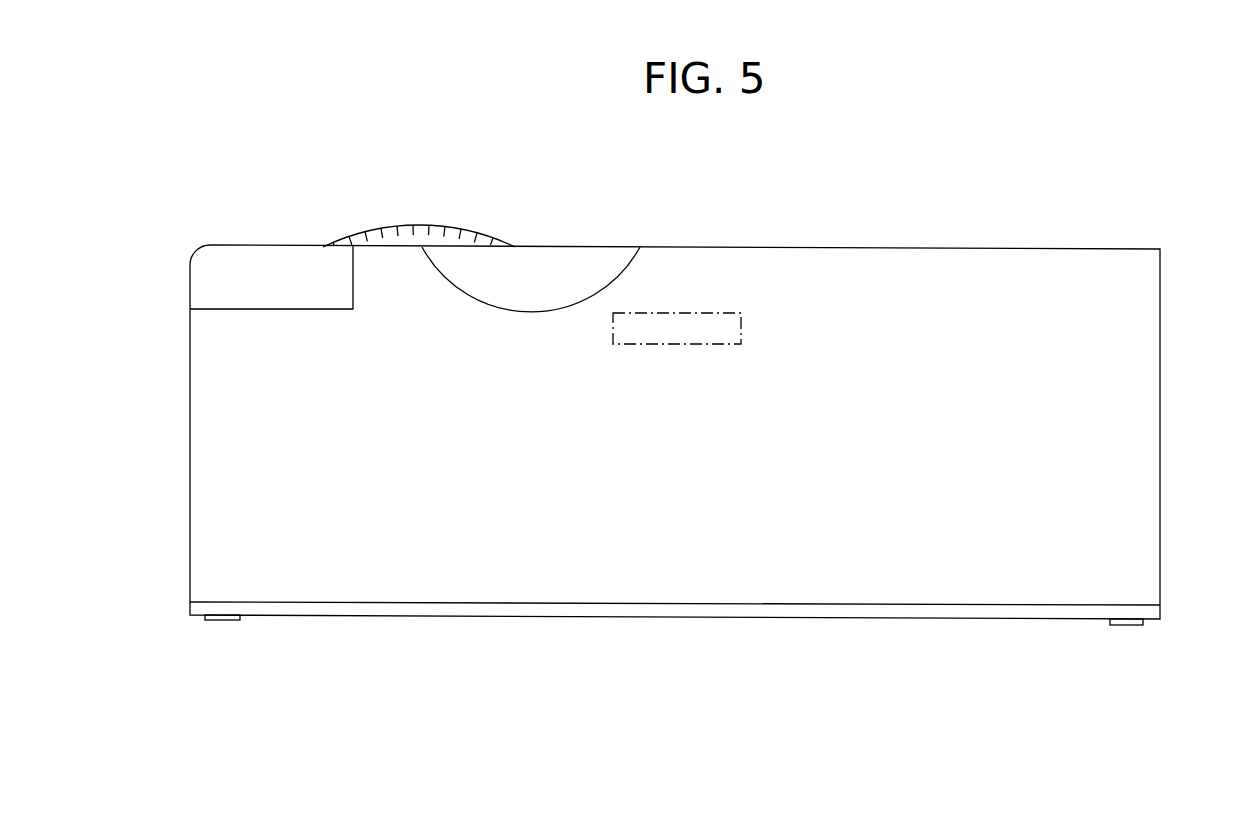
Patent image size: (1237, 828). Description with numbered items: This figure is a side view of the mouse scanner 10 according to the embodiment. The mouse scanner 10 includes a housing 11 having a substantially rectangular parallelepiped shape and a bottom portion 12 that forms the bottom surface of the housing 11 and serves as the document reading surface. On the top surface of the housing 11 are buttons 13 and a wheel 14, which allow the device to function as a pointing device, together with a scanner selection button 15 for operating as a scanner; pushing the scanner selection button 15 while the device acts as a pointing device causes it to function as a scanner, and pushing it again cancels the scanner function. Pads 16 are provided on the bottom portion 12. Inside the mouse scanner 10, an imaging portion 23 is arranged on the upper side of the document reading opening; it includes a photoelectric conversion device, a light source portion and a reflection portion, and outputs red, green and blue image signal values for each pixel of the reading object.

The mouse scanner 10 is at (712, 405).
The housing 11 is at (1143, 359).
The bottom portion 12 is at (805, 610).
The buttons 13 is at (250, 262).
The wheel 14 is at (577, 263).
The scanner selection button 15 is at (408, 238).
The pads 16 is at (219, 622).
The imaging portion 23 is at (741, 314).